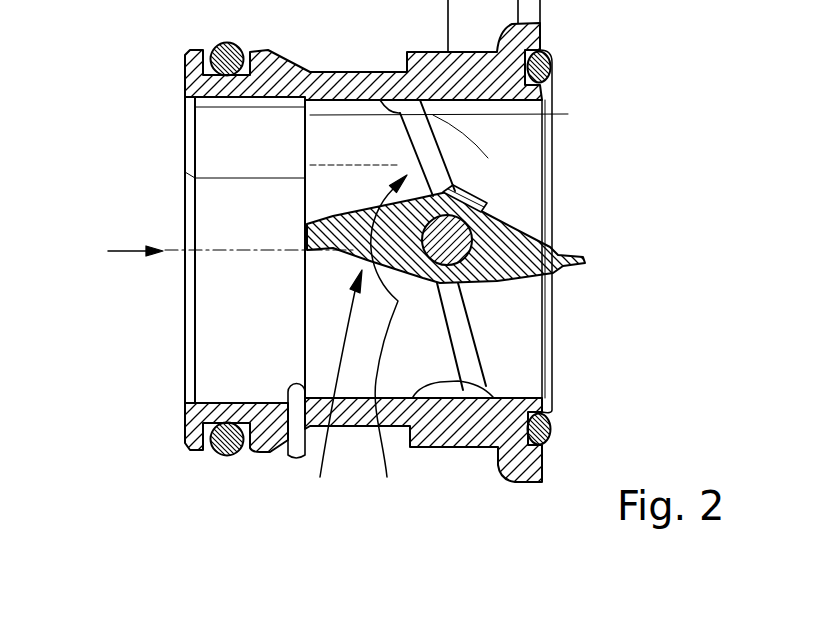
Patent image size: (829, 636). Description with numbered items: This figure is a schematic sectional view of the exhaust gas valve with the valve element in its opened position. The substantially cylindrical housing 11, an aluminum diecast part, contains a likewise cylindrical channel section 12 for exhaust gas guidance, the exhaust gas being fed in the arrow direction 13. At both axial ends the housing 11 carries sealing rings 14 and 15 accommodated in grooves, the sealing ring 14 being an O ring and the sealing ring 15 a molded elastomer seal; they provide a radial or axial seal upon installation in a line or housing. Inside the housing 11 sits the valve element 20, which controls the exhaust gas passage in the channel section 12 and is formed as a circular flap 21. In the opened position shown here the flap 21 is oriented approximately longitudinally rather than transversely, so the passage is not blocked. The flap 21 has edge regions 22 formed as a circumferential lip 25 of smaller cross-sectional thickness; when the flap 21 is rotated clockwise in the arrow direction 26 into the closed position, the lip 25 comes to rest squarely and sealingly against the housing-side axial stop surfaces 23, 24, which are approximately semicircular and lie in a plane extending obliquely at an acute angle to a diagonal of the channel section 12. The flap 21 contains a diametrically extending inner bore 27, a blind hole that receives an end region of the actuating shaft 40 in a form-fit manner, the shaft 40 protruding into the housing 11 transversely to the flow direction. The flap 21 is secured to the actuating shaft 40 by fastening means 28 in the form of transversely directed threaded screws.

The housing 11 is at (356, 428).
The channel section 12 is at (287, 438).
The arrow direction 13 is at (128, 254).
The sealing ring 14 is at (224, 454).
The sealing ring 15 is at (550, 426).
The valve element 20 is at (332, 393).
The circular flap 21 is at (515, 262).
The edge regions 22 is at (323, 241).
The axial stop surface 23 is at (402, 112).
The axial stop surface 24 is at (470, 386).
The circumferential lip 25 is at (583, 257).
The arrow direction 26 is at (428, 345).
The inner bore 27 is at (470, 201).
The fastening means 28 is at (568, 114).
The actuating shaft 40 is at (470, 233).